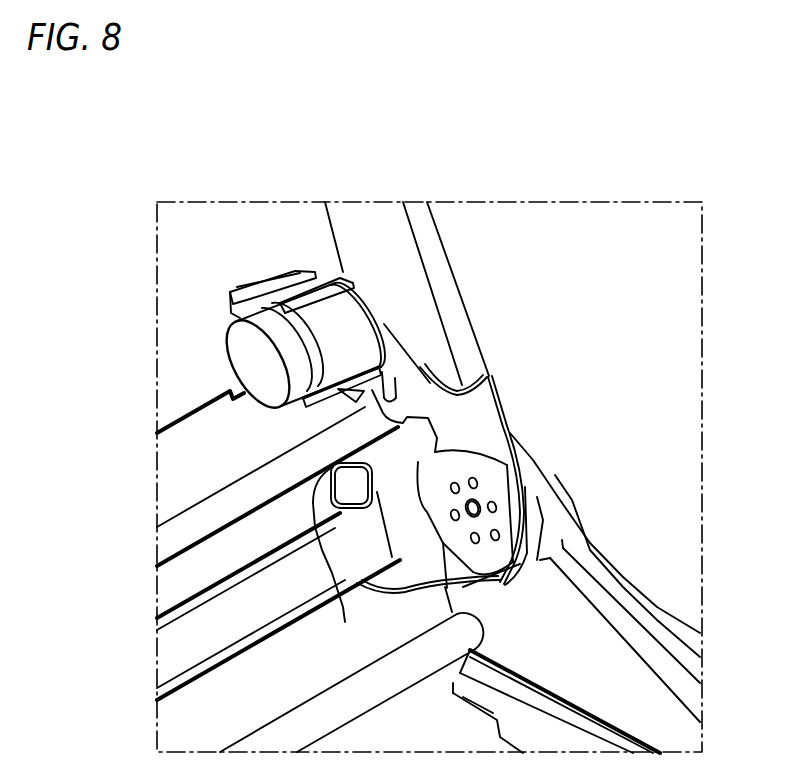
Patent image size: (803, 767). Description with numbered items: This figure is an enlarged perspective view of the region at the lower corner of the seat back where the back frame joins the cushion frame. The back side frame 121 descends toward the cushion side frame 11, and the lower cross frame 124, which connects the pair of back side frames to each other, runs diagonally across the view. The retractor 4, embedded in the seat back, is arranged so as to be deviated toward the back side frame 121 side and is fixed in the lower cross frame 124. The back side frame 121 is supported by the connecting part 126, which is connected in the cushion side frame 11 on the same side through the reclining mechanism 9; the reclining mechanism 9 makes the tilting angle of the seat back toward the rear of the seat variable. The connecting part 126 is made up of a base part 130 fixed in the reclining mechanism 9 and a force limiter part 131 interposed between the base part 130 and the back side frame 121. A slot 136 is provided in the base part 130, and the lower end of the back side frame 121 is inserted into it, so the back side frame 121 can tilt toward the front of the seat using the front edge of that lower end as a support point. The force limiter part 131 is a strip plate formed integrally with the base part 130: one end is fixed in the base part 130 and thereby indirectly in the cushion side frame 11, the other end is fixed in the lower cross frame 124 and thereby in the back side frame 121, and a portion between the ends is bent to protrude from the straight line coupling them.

The retractor 4 is at (272, 273).
The back side frame 121 is at (440, 250).
The slot 136 is at (472, 377).
The connecting part 126 is at (503, 388).
The base part 130 is at (500, 483).
The reclining mechanism 9 is at (540, 522).
The cushion side frame 11 is at (673, 623).
The force limiter part 131 is at (343, 607).
The lower cross frame 124 is at (200, 400).